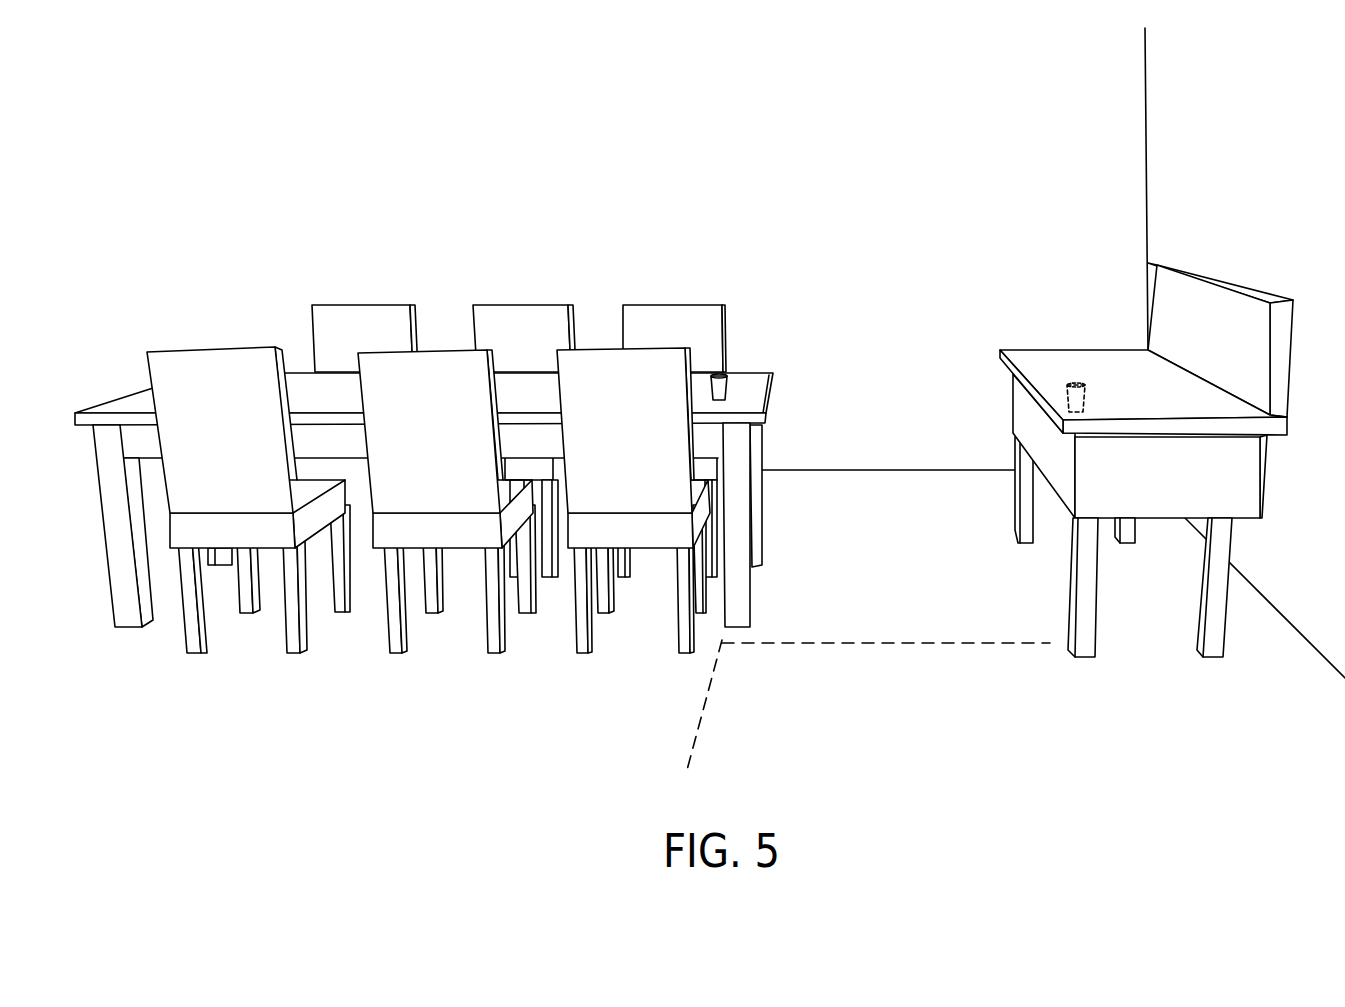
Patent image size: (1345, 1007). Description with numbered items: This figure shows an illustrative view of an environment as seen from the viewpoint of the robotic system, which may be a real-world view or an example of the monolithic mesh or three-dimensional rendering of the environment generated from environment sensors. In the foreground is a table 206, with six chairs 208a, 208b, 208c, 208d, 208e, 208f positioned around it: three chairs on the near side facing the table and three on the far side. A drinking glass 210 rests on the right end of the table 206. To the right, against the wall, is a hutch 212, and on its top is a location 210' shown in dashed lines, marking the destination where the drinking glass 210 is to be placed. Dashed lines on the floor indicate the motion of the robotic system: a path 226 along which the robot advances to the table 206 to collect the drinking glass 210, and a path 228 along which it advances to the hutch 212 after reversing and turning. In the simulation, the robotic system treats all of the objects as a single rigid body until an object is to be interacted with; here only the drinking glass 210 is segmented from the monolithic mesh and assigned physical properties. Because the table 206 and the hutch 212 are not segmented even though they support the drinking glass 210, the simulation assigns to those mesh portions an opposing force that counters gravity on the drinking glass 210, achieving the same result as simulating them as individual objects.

The table 206 is at (760, 372).
The chair 208a is at (363, 305).
The chair 208b is at (513, 305).
The chair 208c is at (660, 305).
The chair 208d is at (178, 350).
The chair 208e is at (425, 351).
The chair 208f is at (585, 349).
The drinking glass 210 is at (772, 401).
The location 210' is at (1119, 388).
The hutch 212 is at (1023, 349).
The path 226 is at (712, 668).
The path 228 is at (858, 642).